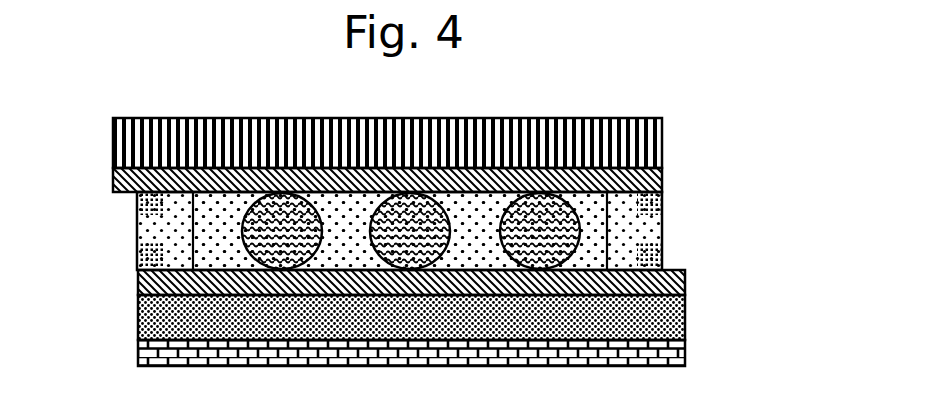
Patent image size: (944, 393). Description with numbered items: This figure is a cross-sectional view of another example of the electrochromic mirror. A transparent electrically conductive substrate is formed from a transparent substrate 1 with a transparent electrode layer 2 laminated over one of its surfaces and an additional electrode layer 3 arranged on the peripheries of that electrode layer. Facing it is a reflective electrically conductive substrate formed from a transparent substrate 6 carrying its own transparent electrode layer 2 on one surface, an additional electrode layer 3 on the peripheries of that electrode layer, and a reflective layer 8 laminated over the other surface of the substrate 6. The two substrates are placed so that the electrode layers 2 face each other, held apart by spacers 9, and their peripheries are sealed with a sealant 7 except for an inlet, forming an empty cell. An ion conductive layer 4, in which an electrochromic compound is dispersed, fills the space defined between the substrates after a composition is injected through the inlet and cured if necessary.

The transparent substrate 1 is at (664, 142).
The transparent electrode layer 2 is at (664, 182).
The additional electrode layer 3 is at (658, 256).
The ion conductive layer 4 is at (212, 252).
The transparent substrate 6 is at (670, 323).
The sealant 7 is at (156, 224).
The reflective layer 8 is at (670, 352).
The spacer 9 is at (235, 233).